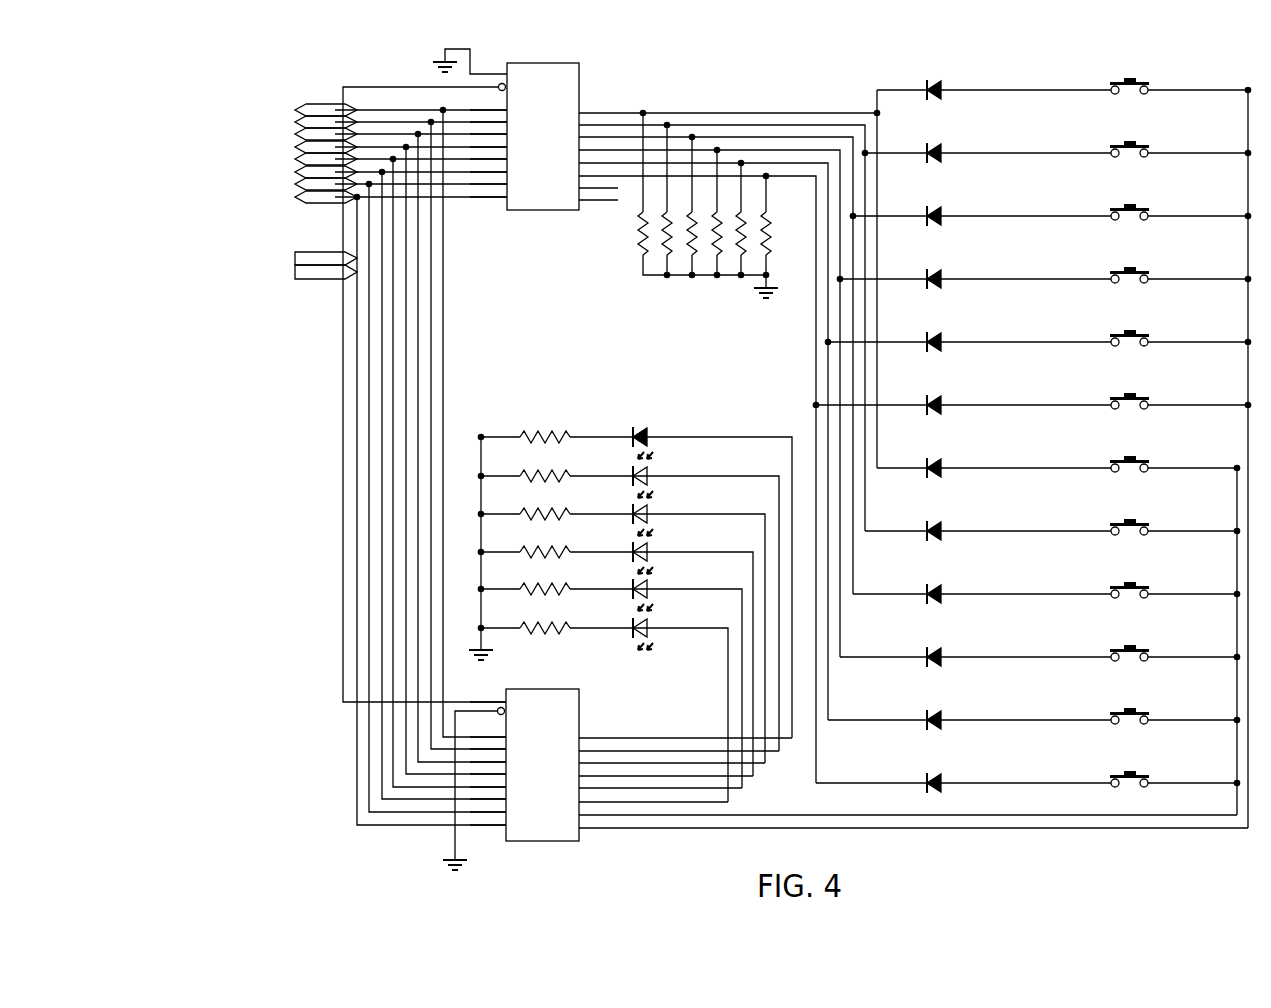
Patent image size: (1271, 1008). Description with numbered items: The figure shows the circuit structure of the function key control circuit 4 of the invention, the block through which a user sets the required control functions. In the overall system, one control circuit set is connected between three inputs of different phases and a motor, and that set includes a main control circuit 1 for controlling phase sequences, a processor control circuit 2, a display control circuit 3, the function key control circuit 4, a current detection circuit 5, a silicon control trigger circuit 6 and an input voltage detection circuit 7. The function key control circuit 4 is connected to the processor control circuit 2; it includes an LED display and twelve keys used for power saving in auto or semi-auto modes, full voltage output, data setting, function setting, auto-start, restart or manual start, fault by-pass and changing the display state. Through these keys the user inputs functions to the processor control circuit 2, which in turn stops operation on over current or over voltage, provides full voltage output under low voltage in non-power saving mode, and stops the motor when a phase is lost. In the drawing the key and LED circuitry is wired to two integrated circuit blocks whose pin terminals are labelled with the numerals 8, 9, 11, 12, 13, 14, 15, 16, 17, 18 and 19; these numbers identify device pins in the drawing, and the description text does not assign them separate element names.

The function key control circuit 4 is at (305, 465).
The main control circuit 1 is at (470, 62).
The CPU control circuit 2 is at (859, 506).
The display control circuit 3 is at (488, 498).
The current detection circuit 5 is at (853, 480).
The silicon control trigger circuit 6 is at (599, 468).
The input voltage detection circuit 7 is at (488, 460).
The pin 8 is at (488, 448).
The pin 9 is at (606, 442).
The pin 11 is at (673, 400).
The pin 12 is at (722, 443).
The pin 13 is at (661, 448).
The pin 14 is at (655, 449).
The pin 15 is at (703, 456).
The pin 16 is at (697, 472).
The pin 17 is at (544, 461).
The pin 18 is at (544, 461).
The pin 19 is at (567, 406).